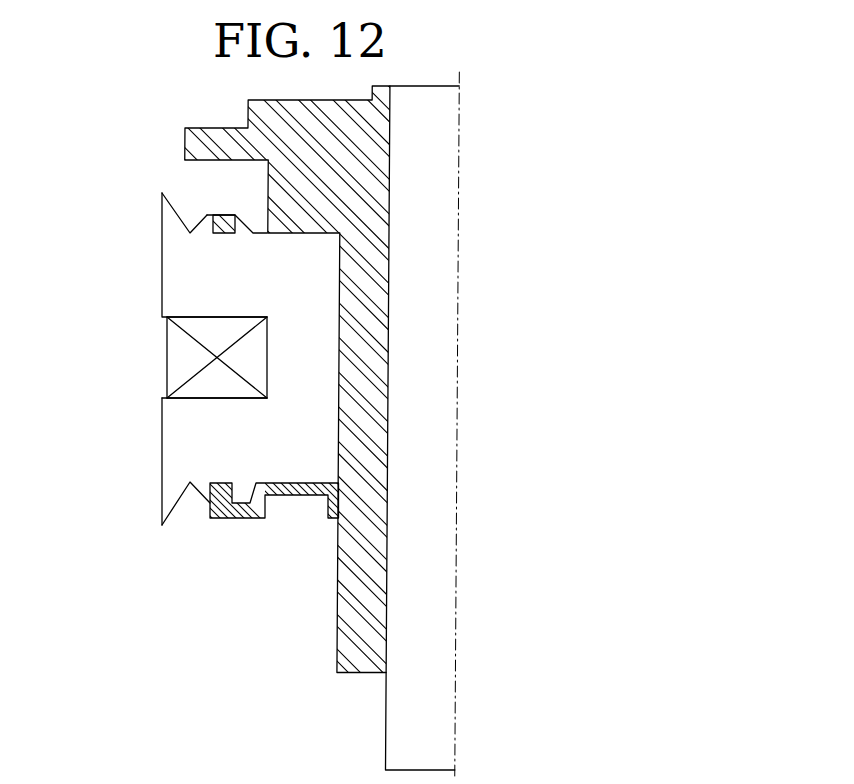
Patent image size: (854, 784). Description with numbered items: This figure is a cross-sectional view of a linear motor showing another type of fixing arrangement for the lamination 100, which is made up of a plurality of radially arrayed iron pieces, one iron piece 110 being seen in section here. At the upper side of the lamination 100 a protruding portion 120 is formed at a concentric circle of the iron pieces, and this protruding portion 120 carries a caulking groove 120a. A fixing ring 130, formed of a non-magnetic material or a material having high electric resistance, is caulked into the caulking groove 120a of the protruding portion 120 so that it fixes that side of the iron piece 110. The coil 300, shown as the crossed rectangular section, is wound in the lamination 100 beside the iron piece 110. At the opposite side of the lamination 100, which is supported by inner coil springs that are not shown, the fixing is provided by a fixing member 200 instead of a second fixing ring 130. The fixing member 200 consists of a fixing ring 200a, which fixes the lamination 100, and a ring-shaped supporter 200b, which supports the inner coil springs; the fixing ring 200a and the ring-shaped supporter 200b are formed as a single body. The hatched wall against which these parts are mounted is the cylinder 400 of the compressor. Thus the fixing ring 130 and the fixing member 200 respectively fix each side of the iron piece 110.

The lamination 100 is at (151, 276).
The iron piece 110 is at (167, 462).
The protruding portion 120 is at (197, 223).
The caulking groove 120a is at (230, 215).
The fixing ring 130 is at (215, 215).
The fixing member 200 is at (271, 498).
The fixing ring 200a is at (222, 502).
The ring-shaped supporter 200b is at (295, 495).
The coil 300 is at (172, 359).
The cylinder 400 is at (343, 642).